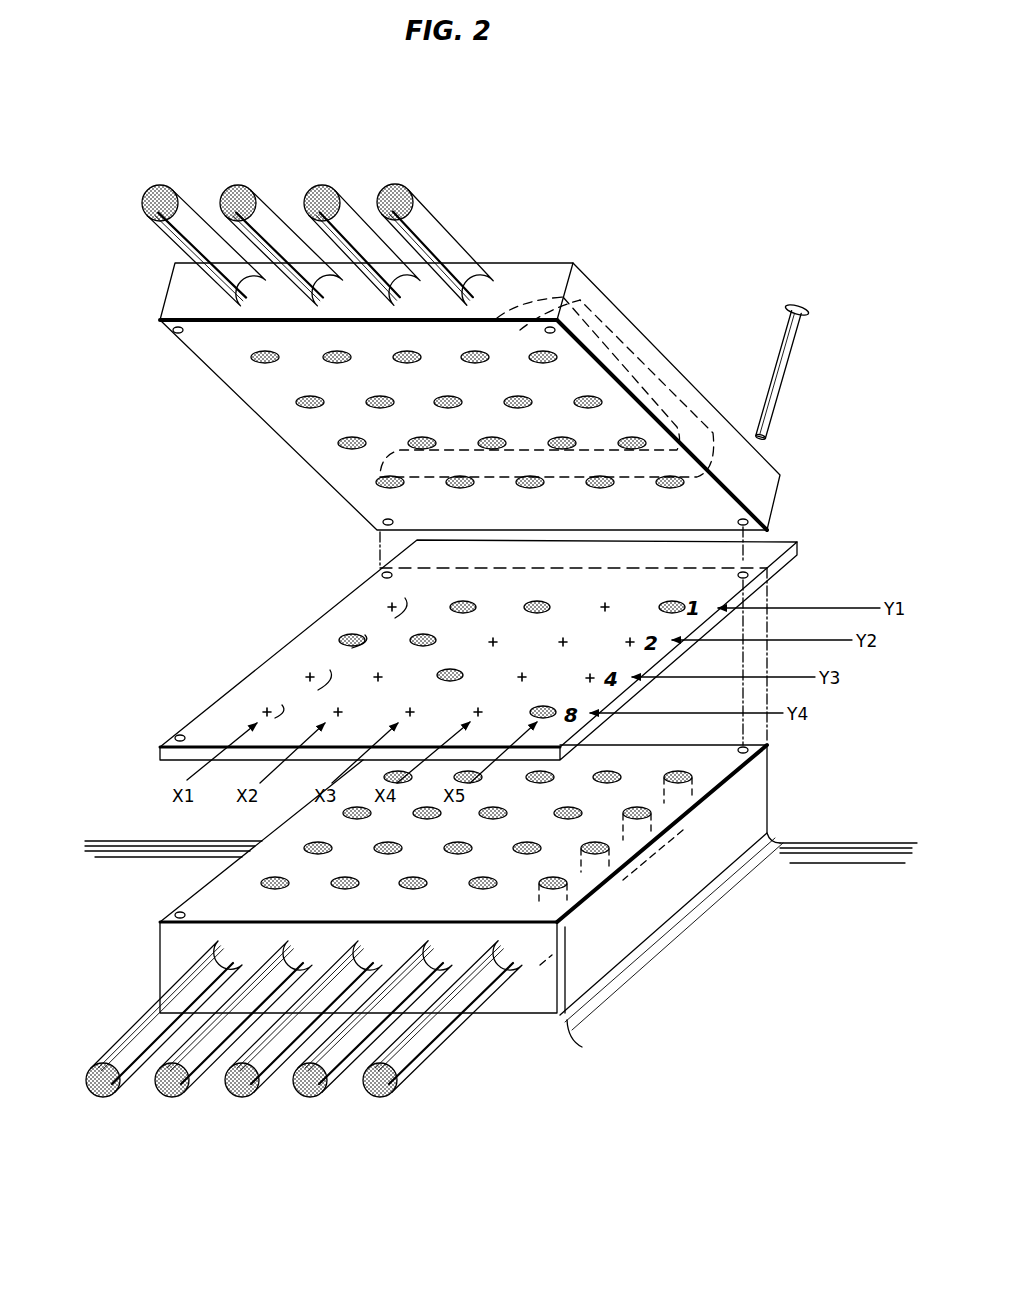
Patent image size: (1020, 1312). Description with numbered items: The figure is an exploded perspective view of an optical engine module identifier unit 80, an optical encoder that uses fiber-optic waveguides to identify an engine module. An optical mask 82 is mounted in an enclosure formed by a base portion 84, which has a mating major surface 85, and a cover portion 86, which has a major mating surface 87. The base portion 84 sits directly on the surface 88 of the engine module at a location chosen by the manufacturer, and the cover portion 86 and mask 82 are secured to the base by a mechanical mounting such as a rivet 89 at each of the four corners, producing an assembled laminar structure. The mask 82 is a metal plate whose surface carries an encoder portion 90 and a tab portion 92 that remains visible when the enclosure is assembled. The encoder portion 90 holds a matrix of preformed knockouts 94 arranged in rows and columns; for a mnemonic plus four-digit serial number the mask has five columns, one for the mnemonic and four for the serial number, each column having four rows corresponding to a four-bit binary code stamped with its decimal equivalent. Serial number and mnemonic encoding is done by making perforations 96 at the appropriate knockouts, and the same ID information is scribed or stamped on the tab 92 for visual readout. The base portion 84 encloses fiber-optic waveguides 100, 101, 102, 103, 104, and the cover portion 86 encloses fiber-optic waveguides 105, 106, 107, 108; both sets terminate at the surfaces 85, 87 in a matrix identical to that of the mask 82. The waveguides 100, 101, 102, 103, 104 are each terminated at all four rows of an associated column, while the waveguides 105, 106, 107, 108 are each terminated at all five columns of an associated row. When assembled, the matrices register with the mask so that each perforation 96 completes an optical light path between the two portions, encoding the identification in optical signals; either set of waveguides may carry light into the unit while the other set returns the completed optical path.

The optical engine module identifier unit 80 is at (813, 283).
The optical mask 82 is at (800, 550).
The base portion 84 is at (770, 784).
The mating major surface 85 is at (205, 885).
The cover portion 86 is at (773, 463).
The major mating surface 87 is at (272, 428).
The surface of the engine module 88 is at (803, 877).
The rivet 89 is at (787, 338).
The encoder portion 90 is at (393, 652).
The tab portion 92 is at (713, 560).
The knockouts 94 is at (408, 710).
The perforations 96 is at (512, 650).
The fiber-optic waveguide 100 is at (100, 1098).
The fiber-optic waveguide 101 is at (169, 1099).
The fiber-optic waveguide 102 is at (239, 1098).
The fiber-optic waveguide 103 is at (306, 1098).
The fiber-optic waveguide 104 is at (376, 1099).
The fiber-optic waveguide 105 is at (163, 187).
The fiber-optic waveguide 106 is at (243, 187).
The fiber-optic waveguide 107 is at (327, 187).
The fiber-optic waveguide 108 is at (400, 186).